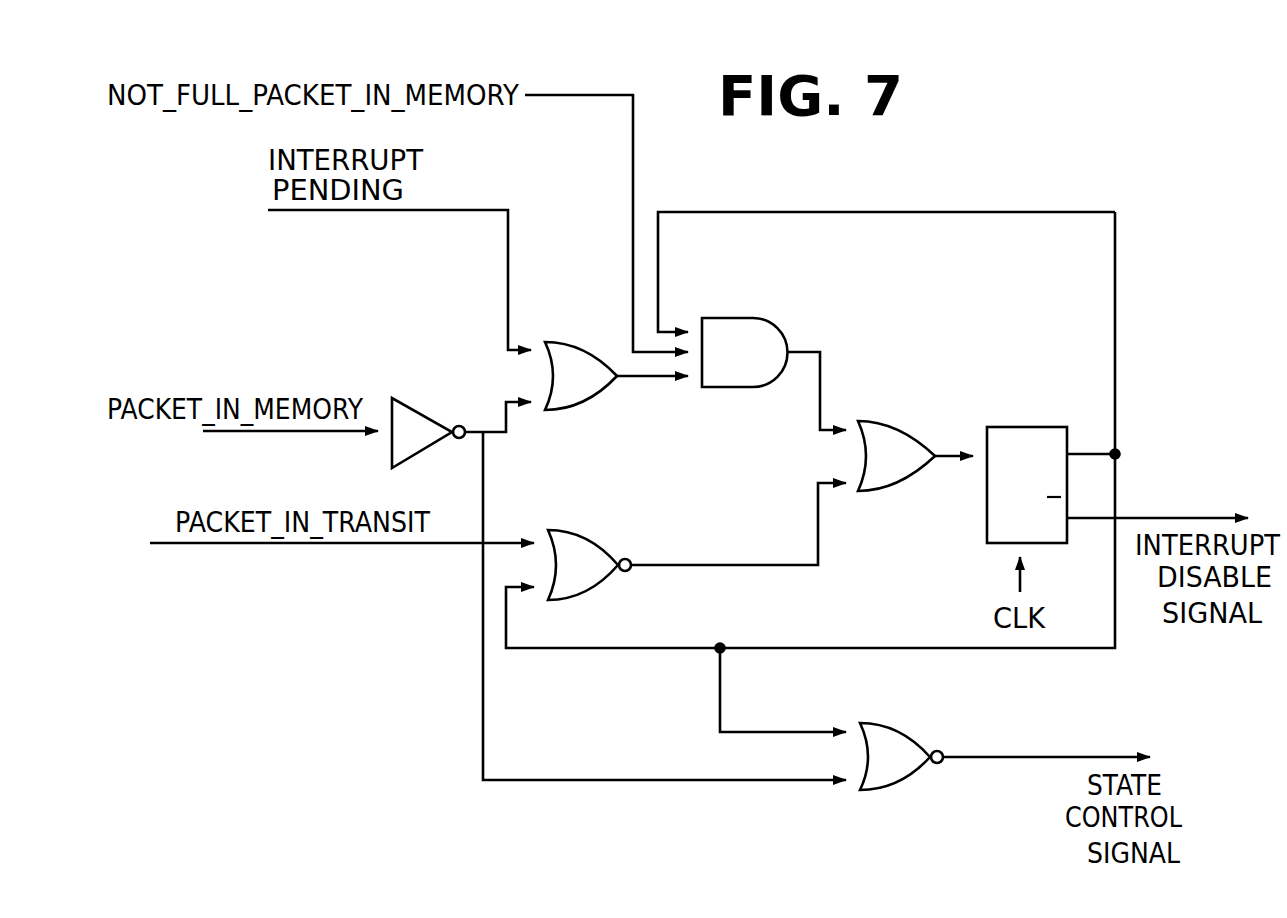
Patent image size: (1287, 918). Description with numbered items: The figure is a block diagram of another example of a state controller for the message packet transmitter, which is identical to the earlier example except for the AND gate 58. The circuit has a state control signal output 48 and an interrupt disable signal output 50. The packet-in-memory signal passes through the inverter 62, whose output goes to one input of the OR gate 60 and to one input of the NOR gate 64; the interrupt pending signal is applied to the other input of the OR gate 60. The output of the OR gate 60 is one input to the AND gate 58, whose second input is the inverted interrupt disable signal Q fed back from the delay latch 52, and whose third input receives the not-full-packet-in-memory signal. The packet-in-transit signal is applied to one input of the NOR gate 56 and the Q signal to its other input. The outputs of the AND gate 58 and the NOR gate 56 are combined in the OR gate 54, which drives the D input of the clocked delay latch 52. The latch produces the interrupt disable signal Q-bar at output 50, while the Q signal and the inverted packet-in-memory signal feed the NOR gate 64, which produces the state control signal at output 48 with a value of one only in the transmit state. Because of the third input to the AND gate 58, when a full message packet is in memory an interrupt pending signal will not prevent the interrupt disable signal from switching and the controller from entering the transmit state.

The state control signal output 48 is at (1108, 754).
The interrupt disable signal output 50 is at (1177, 514).
The delay latch 52 is at (1035, 427).
The OR gate 54 is at (891, 482).
The NOR gate 56 is at (603, 549).
The AND gate 58 is at (748, 324).
The OR gate 60 is at (577, 347).
The inverter 62 is at (423, 422).
The NOR gate 64 is at (900, 734).